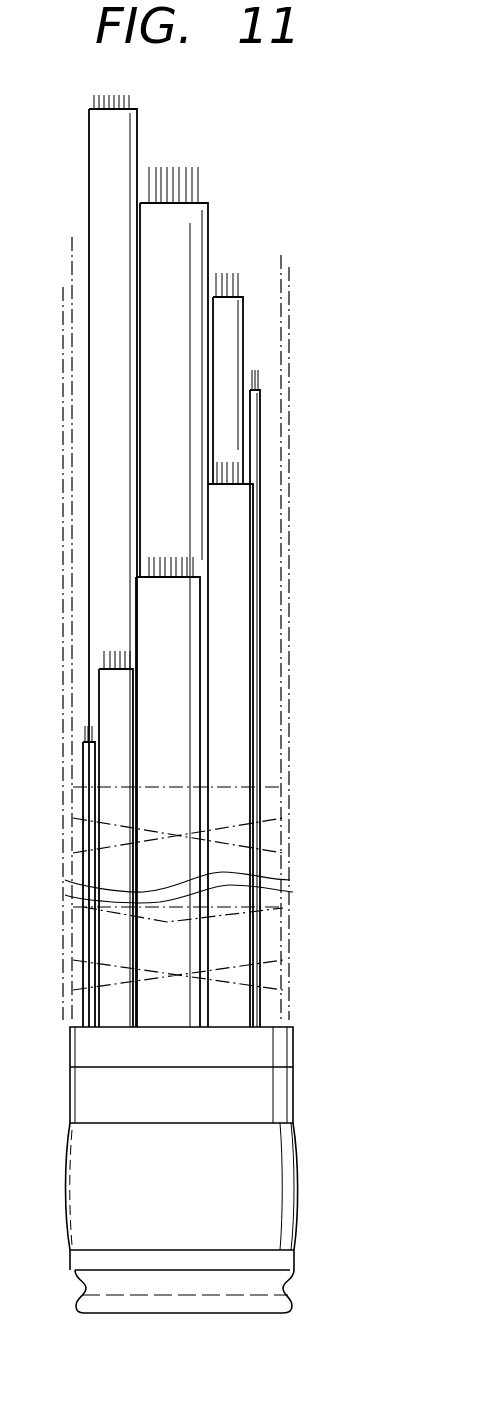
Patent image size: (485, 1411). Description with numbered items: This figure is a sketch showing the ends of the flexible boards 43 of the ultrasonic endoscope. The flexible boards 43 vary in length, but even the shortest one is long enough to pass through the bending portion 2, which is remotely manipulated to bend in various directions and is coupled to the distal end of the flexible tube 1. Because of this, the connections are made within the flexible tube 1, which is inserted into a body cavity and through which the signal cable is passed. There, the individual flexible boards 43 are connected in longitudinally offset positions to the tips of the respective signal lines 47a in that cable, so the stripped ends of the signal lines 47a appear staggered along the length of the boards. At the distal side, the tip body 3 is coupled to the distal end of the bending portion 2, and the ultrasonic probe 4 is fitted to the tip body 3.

The flexible tube 1 is at (297, 422).
The bending portion 2 is at (315, 1022).
The tip body 3 is at (298, 1093).
The ultrasonic probe 4 is at (310, 1200).
The flexible boards 43 is at (90, 774).
The signal lines 47a is at (198, 180).